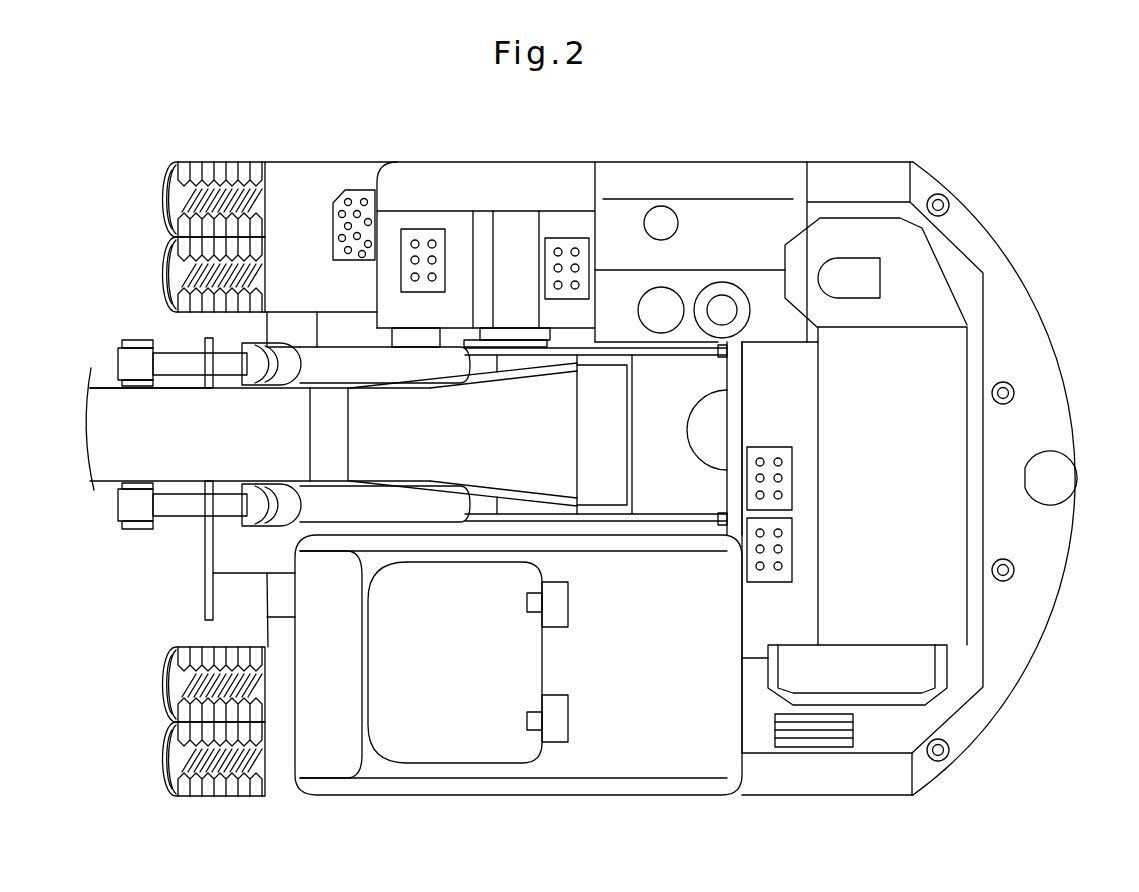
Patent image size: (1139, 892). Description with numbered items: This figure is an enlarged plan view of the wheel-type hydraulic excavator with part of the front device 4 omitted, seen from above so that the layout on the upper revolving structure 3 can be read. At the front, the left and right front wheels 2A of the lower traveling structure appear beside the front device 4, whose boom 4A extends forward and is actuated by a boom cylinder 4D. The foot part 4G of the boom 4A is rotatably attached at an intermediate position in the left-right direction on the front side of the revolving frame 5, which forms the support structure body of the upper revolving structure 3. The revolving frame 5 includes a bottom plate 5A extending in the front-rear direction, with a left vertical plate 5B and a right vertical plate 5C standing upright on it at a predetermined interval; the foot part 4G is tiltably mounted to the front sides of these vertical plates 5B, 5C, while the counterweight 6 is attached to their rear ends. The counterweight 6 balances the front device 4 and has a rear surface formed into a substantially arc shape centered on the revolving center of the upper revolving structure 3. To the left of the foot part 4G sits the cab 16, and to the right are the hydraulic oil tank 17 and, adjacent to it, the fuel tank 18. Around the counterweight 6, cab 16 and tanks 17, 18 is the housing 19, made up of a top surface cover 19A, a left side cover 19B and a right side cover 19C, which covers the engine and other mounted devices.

The front wheels 2A is at (231, 183).
The upper revolving structure 3 is at (437, 156).
The front device 4 is at (132, 458).
The boom 4A is at (130, 416).
The boom cylinder 4D is at (176, 365).
The foot part 4G is at (590, 475).
The revolving frame 5 is at (708, 493).
The bottom plate 5A is at (693, 383).
The left vertical plate 5B is at (652, 522).
The right vertical plate 5C is at (665, 350).
The counterweight 6 is at (1018, 418).
The cab 16 is at (637, 717).
The hydraulic oil tank 17 is at (765, 297).
The fuel tank 18 is at (695, 227).
The housing 19 is at (905, 729).
The top surface cover 19A is at (885, 737).
The left side cover 19B is at (793, 776).
The right side cover 19C is at (845, 188).